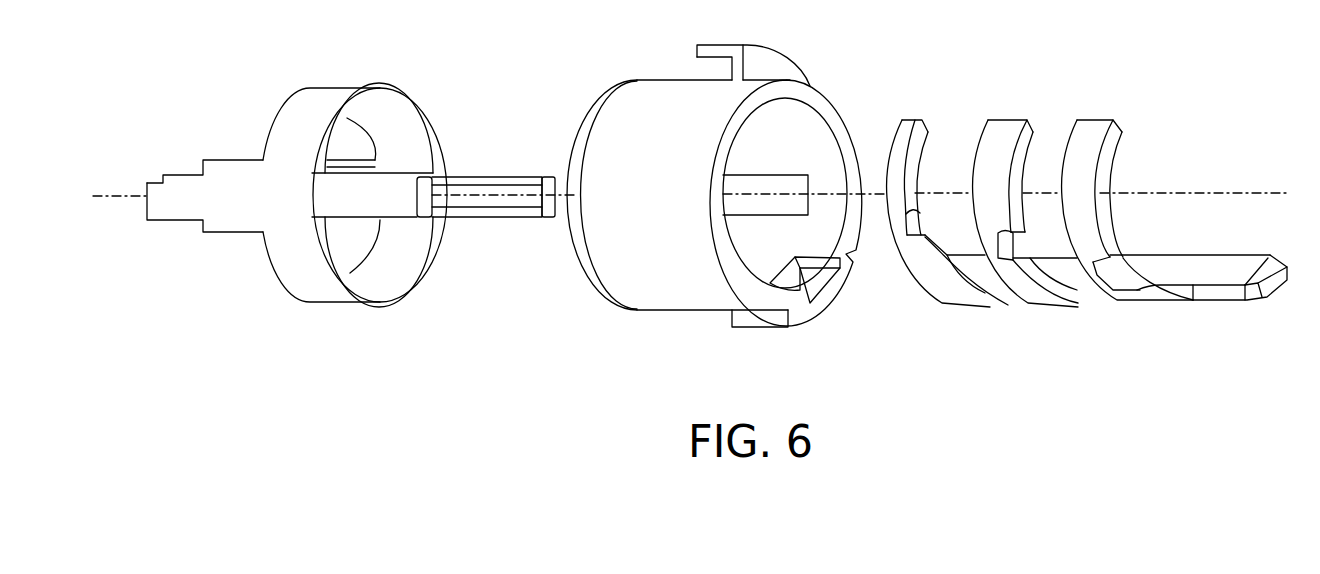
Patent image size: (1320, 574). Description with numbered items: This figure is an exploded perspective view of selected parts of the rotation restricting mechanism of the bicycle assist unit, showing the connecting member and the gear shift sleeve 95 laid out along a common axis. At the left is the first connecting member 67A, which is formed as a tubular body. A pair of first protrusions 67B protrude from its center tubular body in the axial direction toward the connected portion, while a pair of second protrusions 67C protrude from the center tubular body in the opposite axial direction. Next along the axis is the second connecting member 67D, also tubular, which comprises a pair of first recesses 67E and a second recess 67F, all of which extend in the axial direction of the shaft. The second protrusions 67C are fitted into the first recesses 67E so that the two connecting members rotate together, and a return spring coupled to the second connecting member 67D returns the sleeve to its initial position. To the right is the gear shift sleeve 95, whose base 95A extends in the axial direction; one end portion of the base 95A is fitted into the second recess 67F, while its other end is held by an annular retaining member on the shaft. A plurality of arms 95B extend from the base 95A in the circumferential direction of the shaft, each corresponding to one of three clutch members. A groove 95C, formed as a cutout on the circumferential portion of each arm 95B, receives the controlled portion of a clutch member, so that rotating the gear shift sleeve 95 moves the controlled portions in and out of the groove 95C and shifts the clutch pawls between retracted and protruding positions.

The first connecting member 67A is at (335, 88).
The first protrusions 67B is at (175, 175).
The second protrusions 67C is at (497, 175).
The second connecting member 67D is at (673, 80).
The first recesses 67E is at (777, 177).
The second recess 67F is at (810, 257).
The gear shift sleeve 95 is at (1232, 255).
The base 95A is at (1212, 303).
The arms 95B is at (910, 120).
The groove 95C is at (903, 233).